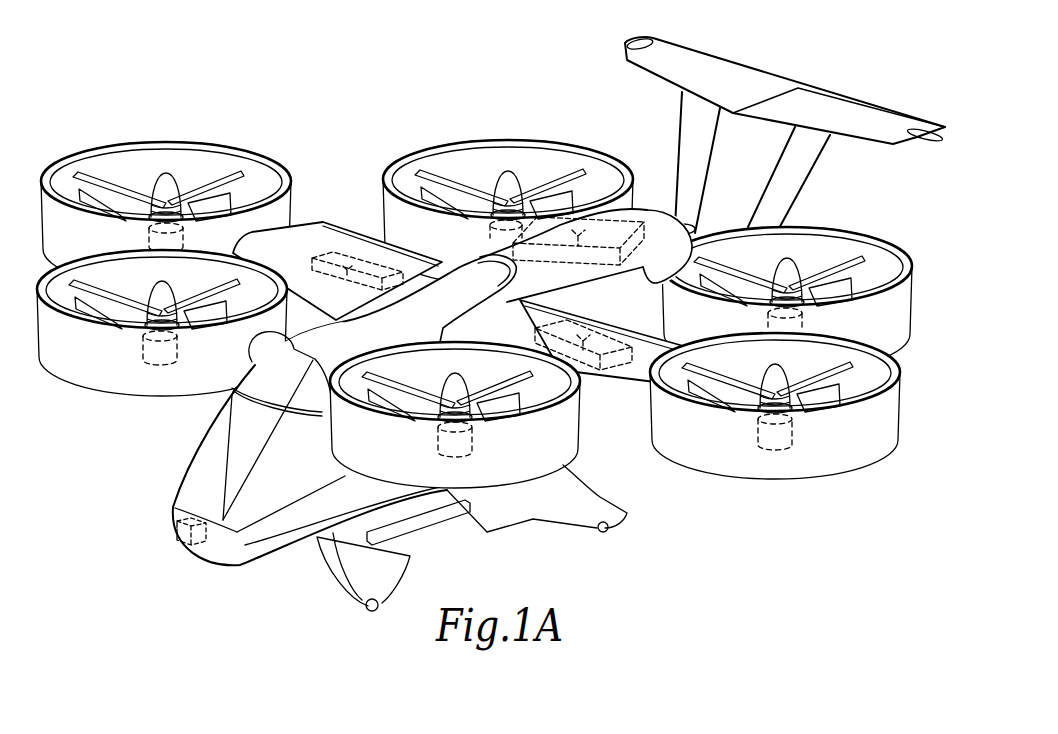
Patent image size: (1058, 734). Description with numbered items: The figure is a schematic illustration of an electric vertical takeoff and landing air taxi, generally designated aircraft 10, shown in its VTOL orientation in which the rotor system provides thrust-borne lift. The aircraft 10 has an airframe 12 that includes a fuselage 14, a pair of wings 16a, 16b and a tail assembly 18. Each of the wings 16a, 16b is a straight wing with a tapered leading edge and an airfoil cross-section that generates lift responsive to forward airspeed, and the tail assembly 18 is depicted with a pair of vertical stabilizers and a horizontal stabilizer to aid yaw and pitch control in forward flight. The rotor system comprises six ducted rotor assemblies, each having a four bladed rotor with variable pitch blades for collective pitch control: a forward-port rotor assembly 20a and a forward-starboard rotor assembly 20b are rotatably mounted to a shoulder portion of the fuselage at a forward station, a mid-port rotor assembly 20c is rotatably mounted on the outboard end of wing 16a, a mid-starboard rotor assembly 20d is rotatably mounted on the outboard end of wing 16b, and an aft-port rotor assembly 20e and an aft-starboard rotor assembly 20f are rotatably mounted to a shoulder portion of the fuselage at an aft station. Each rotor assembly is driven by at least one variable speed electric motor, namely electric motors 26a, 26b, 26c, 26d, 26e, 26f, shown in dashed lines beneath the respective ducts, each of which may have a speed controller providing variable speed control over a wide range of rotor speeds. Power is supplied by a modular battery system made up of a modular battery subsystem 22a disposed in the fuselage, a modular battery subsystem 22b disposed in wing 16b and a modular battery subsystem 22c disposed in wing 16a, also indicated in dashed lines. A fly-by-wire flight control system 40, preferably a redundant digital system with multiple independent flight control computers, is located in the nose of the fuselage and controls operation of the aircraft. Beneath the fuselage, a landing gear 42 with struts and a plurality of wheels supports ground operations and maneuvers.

The aircraft 10 is at (787, 62).
The airframe 12 is at (245, 545).
The fuselage 14 is at (282, 535).
The wing 16a is at (628, 370).
The wing 16b is at (305, 240).
The tail assembly 18 is at (843, 112).
The forward-port rotor assembly 20a is at (565, 445).
The forward-starboard rotor assembly 20b is at (143, 386).
The mid-port rotor assembly 20c is at (732, 469).
The mid-starboard rotor assembly 20d is at (151, 152).
The aft-port rotor assembly 20e is at (905, 268).
The aft-starboard rotor assembly 20f is at (501, 146).
The modular battery subsystem 22a is at (612, 215).
The modular battery subsystem 22b is at (347, 252).
The modular battery subsystem 22c is at (588, 375).
The variable speed electric motor 26a is at (472, 436).
The variable speed electric motor 26b is at (143, 345).
The variable speed electric motor 26c is at (792, 436).
The variable speed electric motor 26d is at (215, 240).
The variable speed electric motor 26e is at (805, 323).
The variable speed electric motor 26f is at (489, 237).
The flight control system 40 is at (173, 548).
The landing gear 42 is at (360, 584).